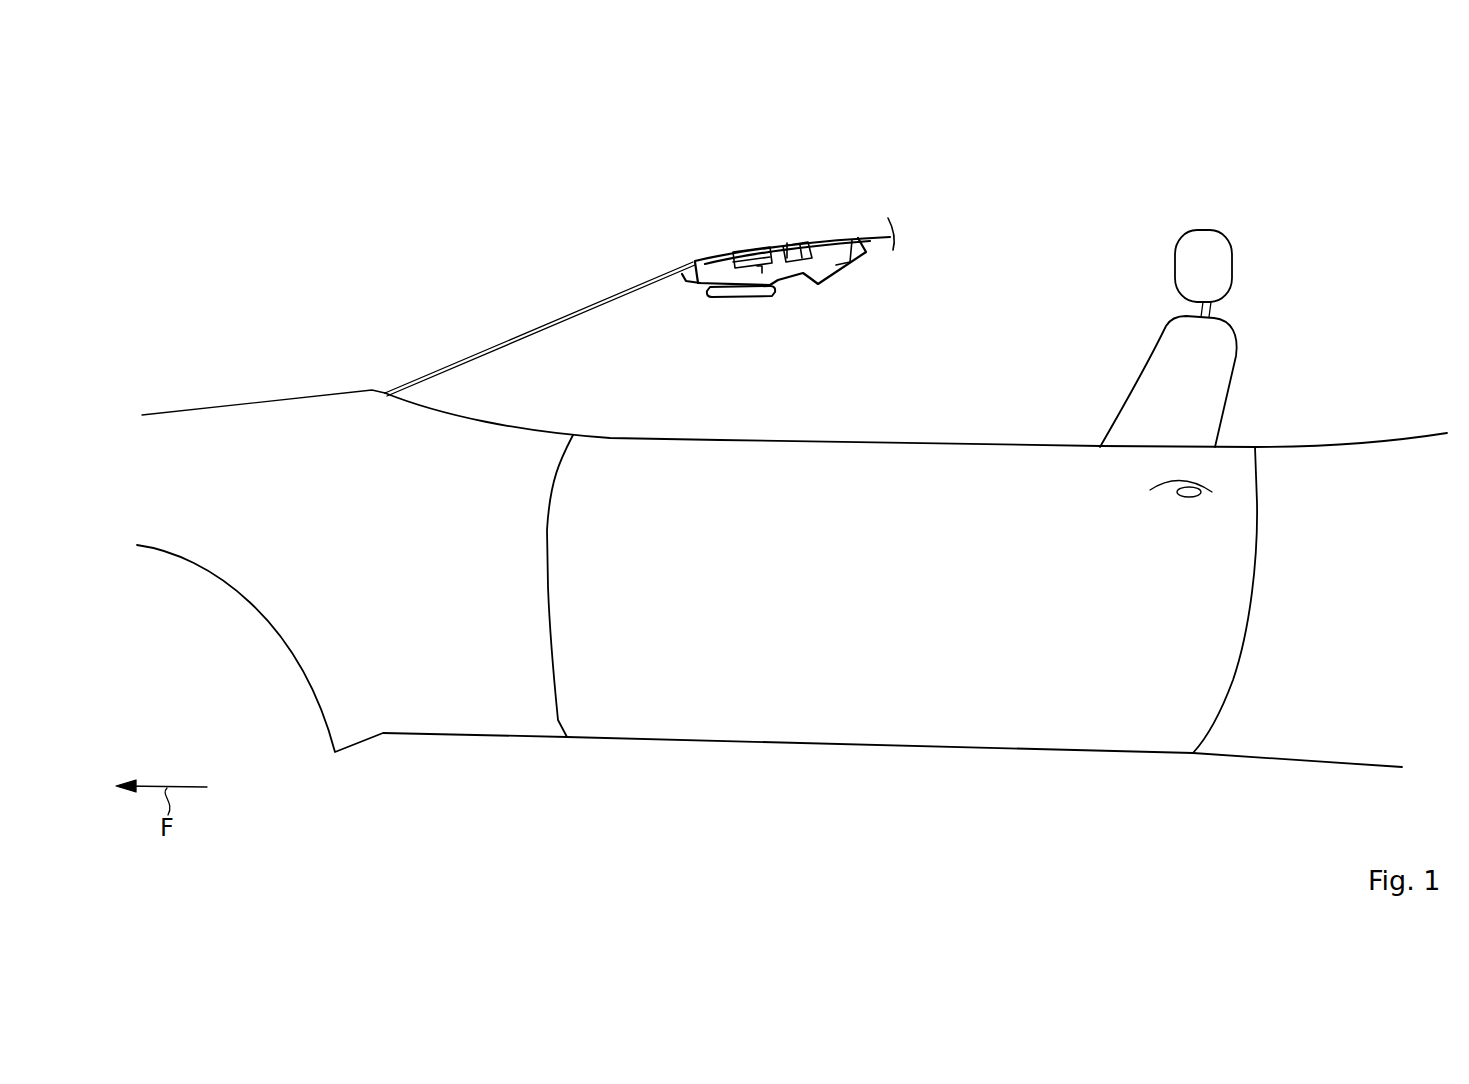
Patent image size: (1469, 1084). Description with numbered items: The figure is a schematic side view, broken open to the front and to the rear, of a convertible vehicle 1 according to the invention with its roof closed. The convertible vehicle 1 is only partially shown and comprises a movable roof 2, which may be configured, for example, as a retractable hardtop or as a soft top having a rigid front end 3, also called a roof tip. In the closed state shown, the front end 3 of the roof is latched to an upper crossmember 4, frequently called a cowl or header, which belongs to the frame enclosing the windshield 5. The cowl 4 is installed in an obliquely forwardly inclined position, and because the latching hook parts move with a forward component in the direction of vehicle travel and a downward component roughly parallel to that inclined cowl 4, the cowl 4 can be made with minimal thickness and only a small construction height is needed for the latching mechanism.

The convertible vehicle 1 is at (1040, 270).
The movable roof 2 is at (887, 232).
The front end of the roof 3 is at (786, 225).
The upper crossmember 4 is at (733, 243).
The windshield 5 is at (643, 281).